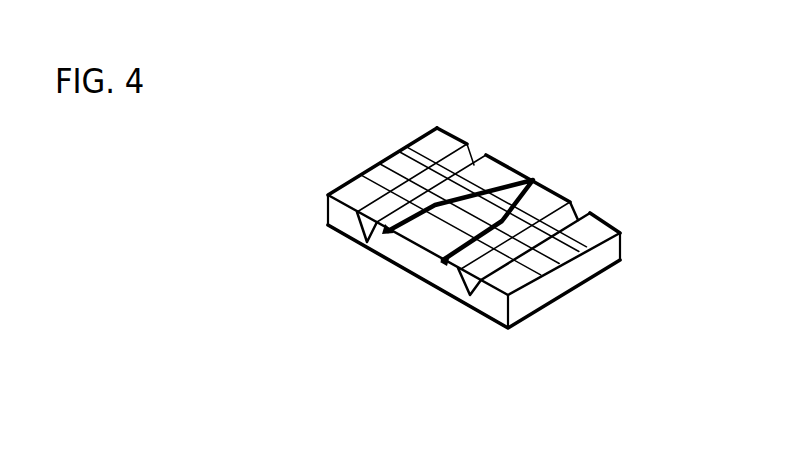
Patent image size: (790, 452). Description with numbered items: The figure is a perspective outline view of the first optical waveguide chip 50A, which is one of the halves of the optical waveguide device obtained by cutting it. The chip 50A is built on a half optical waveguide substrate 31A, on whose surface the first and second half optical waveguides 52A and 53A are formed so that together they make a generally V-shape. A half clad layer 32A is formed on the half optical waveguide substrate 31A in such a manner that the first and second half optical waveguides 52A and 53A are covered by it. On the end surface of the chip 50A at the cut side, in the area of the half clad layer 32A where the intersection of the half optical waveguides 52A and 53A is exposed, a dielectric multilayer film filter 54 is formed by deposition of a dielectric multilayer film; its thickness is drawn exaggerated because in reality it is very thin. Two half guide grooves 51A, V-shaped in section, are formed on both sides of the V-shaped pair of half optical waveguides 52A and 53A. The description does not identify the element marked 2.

The fiber receiving groove 2 is at (472, 177).
The half optical waveguide substrate 31A is at (543, 292).
The half clad layer 32A is at (443, 143).
The first optical waveguide chip 50A is at (455, 218).
The half guide grooves 51A is at (328, 195).
The first half optical waveguide 52A is at (421, 234).
The second half optical waveguide 53A is at (473, 268).
The dielectric multilayer film filter 54 is at (533, 180).